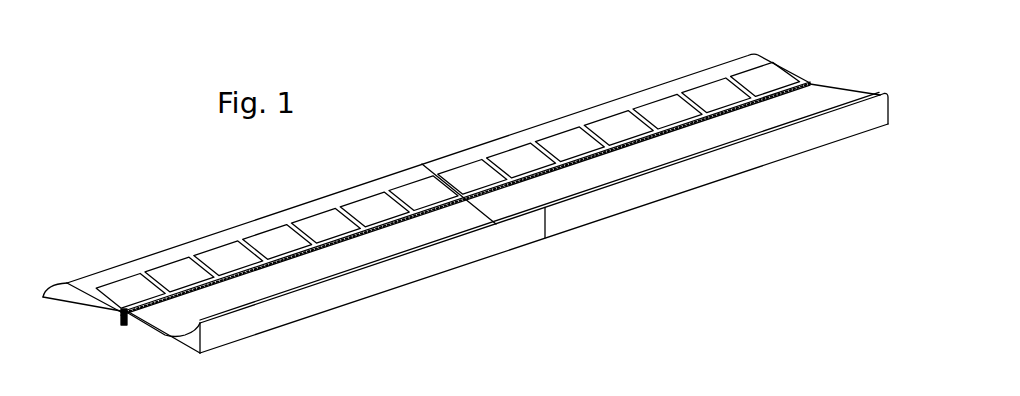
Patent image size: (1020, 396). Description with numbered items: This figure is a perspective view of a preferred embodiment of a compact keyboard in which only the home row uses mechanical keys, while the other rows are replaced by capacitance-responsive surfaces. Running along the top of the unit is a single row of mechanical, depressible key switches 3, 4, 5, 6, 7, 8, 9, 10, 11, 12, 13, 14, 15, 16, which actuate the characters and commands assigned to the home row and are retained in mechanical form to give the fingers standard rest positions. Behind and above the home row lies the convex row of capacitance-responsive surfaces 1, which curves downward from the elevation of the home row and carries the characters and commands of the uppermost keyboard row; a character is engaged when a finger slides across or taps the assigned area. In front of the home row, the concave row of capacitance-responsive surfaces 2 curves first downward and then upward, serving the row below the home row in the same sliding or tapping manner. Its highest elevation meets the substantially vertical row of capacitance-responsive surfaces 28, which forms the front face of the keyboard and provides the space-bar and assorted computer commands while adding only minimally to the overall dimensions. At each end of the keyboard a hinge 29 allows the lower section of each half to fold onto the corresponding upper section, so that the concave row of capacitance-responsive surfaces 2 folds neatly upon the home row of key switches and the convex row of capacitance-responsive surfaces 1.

The convex row of capacitance-responsive surfaces 1 is at (165, 251).
The concave row of capacitance-responsive surfaces 2 is at (258, 297).
The mechanical depressible key switch 3 is at (136, 298).
The mechanical depressible key switch 4 is at (174, 282).
The mechanical depressible key switch 5 is at (223, 266).
The mechanical depressible key switch 6 is at (272, 250).
The mechanical depressible key switch 7 is at (331, 233).
The mechanical depressible key switch 8 is at (380, 217).
The mechanical depressible key switch 9 is at (418, 201).
The mechanical depressible key switch 10 is at (464, 184).
The mechanical depressible key switch 11 is at (513, 168).
The mechanical depressible key switch 12 is at (578, 152).
The mechanical depressible key switch 13 is at (627, 135).
The mechanical depressible key switch 14 is at (676, 119).
The mechanical depressible key switch 15 is at (708, 103).
The mechanical depressible key switch 16 is at (757, 86).
The vertical row of capacitance-responsive surfaces 28 is at (325, 302).
The hinge 29 is at (123, 325).